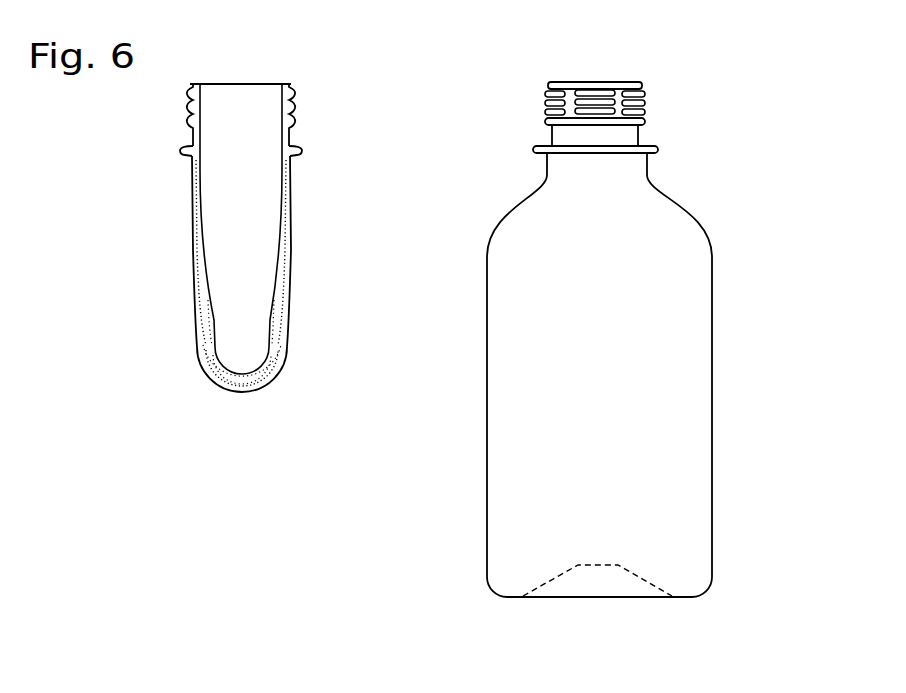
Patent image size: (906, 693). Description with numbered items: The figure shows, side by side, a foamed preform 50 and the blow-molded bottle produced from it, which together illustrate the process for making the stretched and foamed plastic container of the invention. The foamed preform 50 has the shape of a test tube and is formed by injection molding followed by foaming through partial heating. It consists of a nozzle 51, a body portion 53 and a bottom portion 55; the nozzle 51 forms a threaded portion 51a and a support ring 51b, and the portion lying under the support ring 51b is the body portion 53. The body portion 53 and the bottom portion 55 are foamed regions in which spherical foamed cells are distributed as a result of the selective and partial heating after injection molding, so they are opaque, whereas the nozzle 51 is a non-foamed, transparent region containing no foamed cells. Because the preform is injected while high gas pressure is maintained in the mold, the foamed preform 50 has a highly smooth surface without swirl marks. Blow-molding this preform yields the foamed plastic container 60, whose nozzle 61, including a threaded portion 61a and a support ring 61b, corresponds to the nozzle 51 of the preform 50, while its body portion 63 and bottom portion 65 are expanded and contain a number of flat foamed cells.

The foamed preform 50 is at (267, 265).
The nozzle 51 is at (293, 122).
The threaded portion 51a is at (295, 96).
The support ring 51b is at (302, 150).
The body portion 53 is at (197, 298).
The bottom portion 55 is at (243, 392).
The foamed plastic container 60 is at (609, 359).
The nozzle 61 is at (648, 121).
The threaded portion 61a is at (646, 95).
The support ring 61b is at (658, 150).
The body portion 63 is at (485, 457).
The bottom portion 65 is at (708, 588).